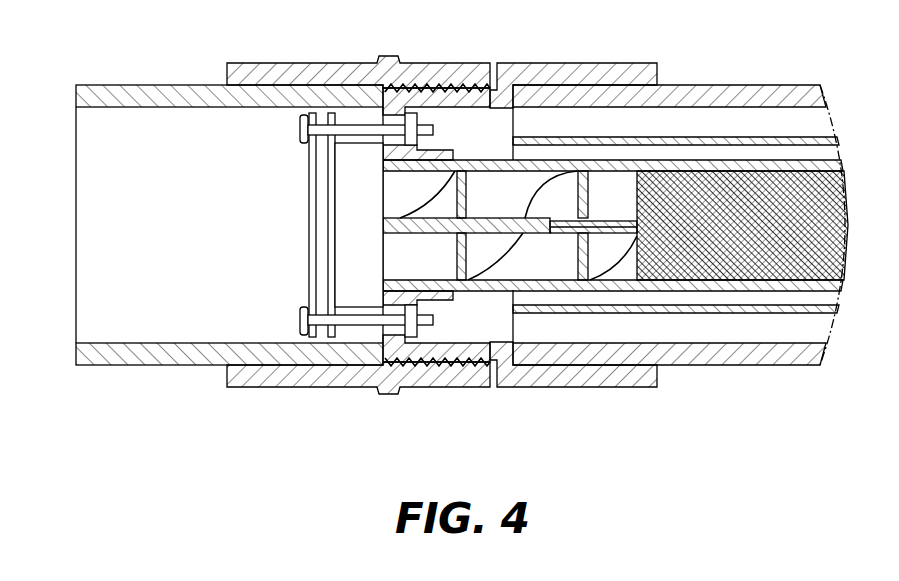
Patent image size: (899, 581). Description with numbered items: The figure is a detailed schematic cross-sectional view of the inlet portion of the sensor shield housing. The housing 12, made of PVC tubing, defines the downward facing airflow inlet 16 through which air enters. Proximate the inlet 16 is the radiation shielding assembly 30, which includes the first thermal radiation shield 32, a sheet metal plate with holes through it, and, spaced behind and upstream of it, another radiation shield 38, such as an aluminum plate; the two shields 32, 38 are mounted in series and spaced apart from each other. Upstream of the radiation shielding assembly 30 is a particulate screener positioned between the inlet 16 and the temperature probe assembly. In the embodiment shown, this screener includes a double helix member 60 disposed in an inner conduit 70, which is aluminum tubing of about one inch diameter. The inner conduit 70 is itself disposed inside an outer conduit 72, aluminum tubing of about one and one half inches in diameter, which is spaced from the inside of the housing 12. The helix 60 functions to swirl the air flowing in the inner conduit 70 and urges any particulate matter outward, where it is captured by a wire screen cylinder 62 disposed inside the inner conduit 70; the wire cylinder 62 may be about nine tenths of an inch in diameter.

The housing 12 is at (714, 84).
The airflow inlet 16 is at (98, 194).
The radiation shielding assembly 30 is at (339, 225).
The first thermal radiation shield 32 is at (308, 225).
The radiation shield 38 is at (335, 177).
The double helix member 60 is at (487, 263).
The wire screen cylinder 62 is at (795, 192).
The inner conduit 70 is at (478, 160).
The outer conduit 72 is at (550, 135).